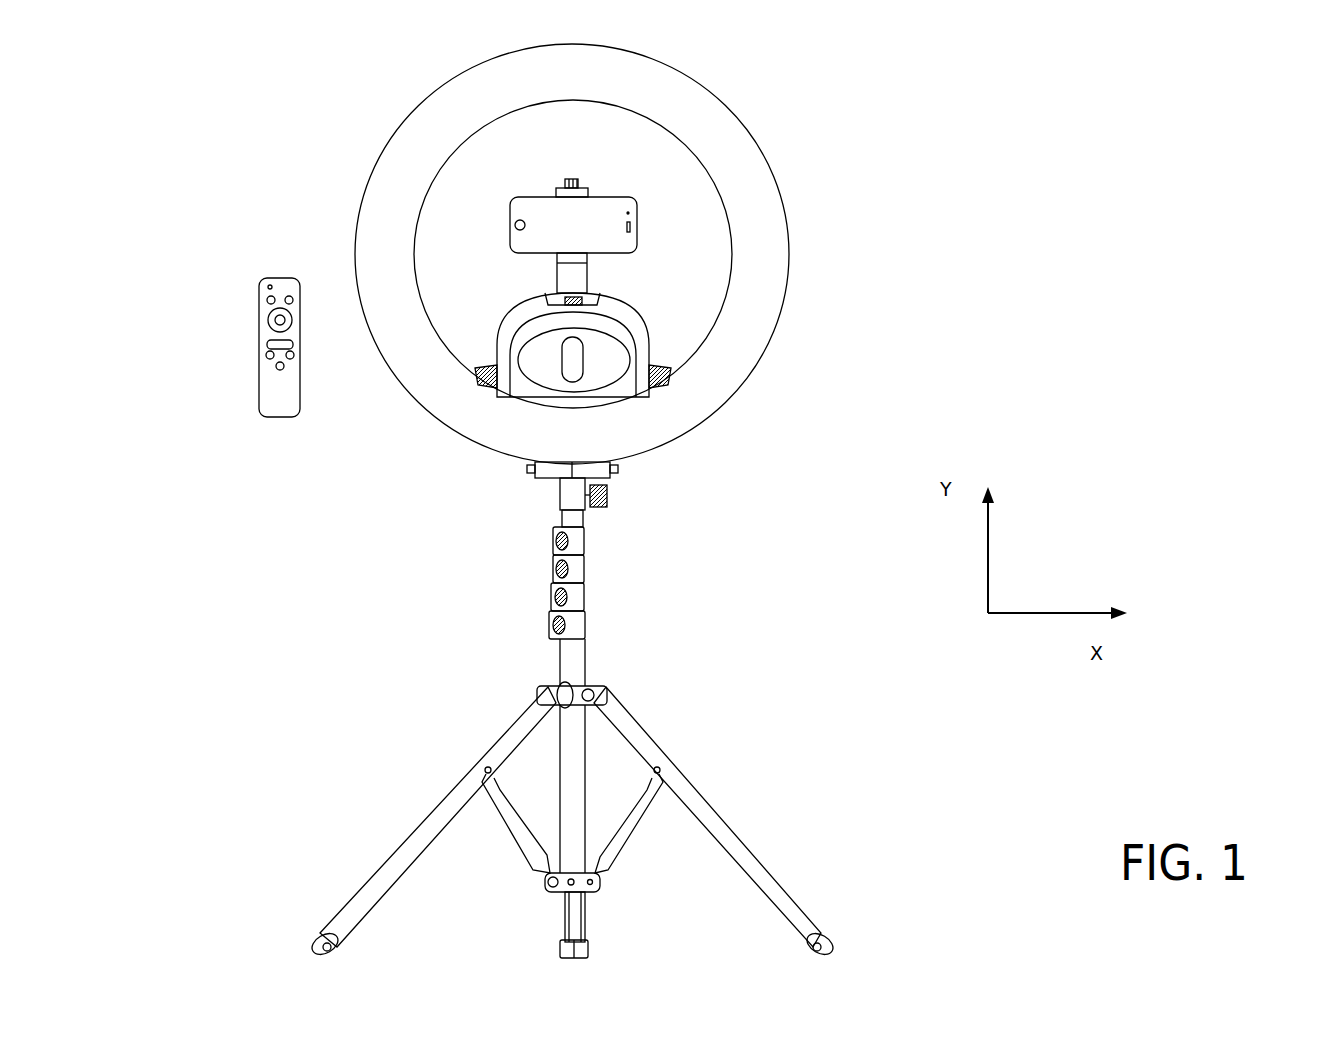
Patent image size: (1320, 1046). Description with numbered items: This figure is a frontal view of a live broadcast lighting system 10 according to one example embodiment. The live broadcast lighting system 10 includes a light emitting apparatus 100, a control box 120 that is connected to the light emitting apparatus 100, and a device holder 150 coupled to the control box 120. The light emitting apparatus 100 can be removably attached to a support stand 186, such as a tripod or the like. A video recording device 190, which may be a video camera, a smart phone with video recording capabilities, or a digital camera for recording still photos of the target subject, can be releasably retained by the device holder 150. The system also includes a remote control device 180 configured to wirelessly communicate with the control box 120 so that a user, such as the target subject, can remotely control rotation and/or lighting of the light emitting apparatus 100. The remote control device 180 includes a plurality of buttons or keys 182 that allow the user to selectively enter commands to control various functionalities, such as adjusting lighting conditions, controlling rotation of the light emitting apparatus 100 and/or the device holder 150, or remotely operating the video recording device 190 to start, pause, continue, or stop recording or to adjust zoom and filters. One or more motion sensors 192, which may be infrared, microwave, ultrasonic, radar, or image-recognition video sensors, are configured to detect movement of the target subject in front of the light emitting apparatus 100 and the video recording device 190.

The live broadcast lighting system 10 is at (240, 578).
The light emitting apparatus 100 is at (840, 270).
The control box 120 is at (604, 389).
The device holder 150 is at (575, 278).
The remote control device 180 is at (263, 282).
The buttons or keys 182 is at (278, 318).
The support stand 186 is at (661, 660).
The video recording device 190 is at (558, 213).
The motion sensors 192 is at (517, 228).